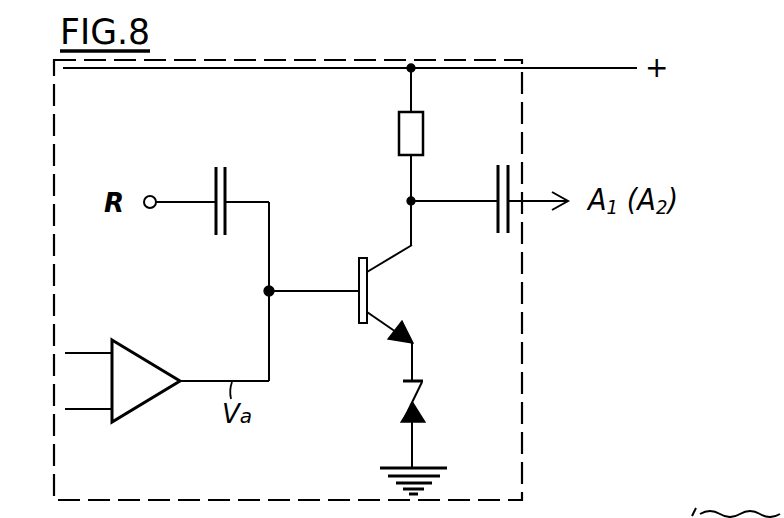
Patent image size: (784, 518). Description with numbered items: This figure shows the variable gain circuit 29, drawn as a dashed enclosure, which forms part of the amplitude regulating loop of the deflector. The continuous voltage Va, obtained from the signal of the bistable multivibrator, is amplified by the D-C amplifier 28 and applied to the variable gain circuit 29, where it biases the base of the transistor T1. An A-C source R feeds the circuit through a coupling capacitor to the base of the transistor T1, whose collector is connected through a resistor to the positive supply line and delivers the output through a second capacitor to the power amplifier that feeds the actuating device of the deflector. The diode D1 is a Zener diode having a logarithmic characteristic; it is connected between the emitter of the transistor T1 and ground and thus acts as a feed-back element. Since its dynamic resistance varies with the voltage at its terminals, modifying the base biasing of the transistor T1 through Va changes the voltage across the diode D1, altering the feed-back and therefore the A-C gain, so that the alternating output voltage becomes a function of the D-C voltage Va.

The D-C amplifier 28 is at (167, 381).
The variable gain circuit 29 is at (505, 453).
The transistor T1 is at (361, 294).
The Zener diode D1 is at (432, 405).